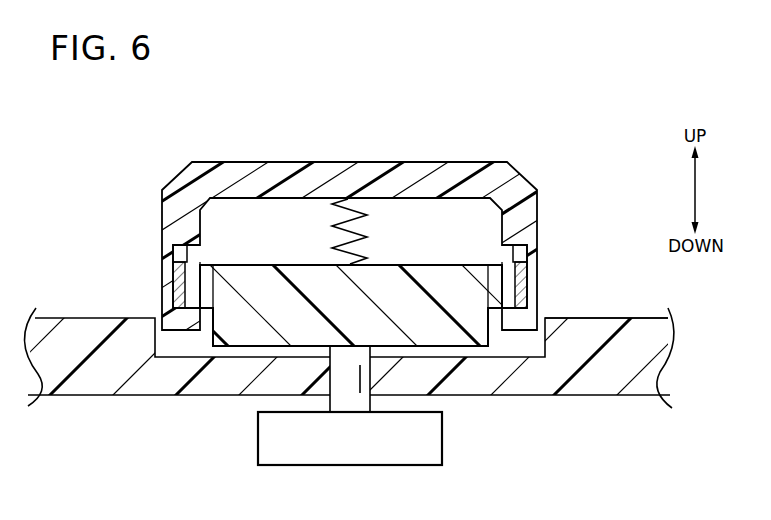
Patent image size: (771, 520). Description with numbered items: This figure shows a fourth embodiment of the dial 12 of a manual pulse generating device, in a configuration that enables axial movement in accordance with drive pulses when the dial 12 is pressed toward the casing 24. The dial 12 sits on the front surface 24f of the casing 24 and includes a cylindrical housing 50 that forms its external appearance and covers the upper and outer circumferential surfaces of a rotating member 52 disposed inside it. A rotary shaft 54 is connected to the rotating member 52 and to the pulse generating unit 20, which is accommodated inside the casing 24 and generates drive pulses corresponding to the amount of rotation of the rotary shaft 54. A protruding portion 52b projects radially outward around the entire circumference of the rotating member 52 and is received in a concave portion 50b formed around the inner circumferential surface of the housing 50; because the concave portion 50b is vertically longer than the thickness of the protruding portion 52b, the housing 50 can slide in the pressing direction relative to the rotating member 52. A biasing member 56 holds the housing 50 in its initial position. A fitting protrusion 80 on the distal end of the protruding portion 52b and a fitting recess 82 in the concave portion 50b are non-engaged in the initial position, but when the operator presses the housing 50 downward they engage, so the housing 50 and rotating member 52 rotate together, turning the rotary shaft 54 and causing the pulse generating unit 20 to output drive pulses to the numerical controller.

The dial 12 is at (350, 251).
The pulse generating unit 20 is at (443, 441).
The casing 24 is at (53, 318).
The front surface 24f is at (622, 318).
The housing 50 is at (272, 178).
The concave portion 50b is at (208, 270).
The rotating member 52 is at (241, 323).
The protruding portion 52b is at (199, 292).
The rotary shaft 54 is at (343, 382).
The biasing member 56 is at (356, 233).
The fitting protrusion 80 is at (181, 262).
The fitting recess 82 is at (181, 245).